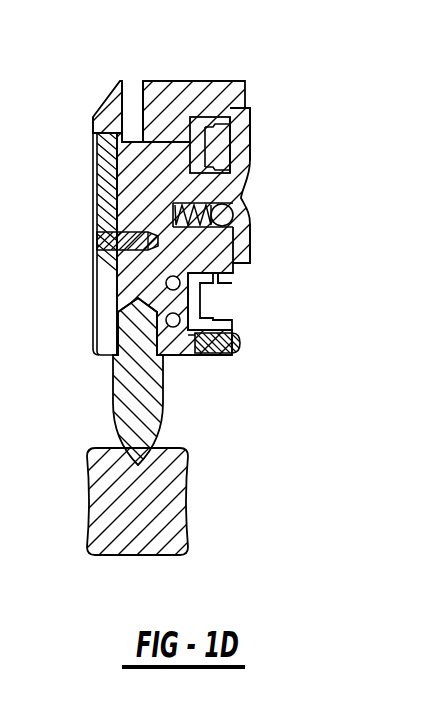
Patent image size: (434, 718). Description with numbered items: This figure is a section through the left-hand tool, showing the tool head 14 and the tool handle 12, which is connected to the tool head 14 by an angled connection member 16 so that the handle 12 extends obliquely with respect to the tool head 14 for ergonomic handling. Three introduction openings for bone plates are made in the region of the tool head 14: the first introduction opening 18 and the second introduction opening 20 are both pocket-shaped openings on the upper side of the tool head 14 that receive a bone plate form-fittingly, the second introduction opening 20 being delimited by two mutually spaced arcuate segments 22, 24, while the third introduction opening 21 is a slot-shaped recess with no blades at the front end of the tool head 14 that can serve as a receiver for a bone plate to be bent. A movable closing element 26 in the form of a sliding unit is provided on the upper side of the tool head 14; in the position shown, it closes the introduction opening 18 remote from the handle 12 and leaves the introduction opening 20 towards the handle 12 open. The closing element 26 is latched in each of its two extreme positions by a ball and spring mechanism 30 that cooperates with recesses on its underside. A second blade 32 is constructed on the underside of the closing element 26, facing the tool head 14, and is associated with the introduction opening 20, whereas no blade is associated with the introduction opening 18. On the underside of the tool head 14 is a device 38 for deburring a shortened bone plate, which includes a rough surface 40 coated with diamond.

The tool handle 12 is at (110, 508).
The tool head 14 is at (209, 90).
The angled connection member 16 is at (150, 405).
The first introduction opening 18 is at (210, 143).
The second introduction opening 20 is at (215, 300).
The third introduction opening 21 is at (131, 85).
The arcuate segment 22 is at (232, 281).
The arcuate segment 24 is at (225, 324).
The closing element 26 is at (250, 162).
The ball and spring mechanism 30 is at (232, 209).
The second blade 32 is at (243, 250).
The deburring device 38 is at (110, 307).
The rough surface 40 is at (97, 272).